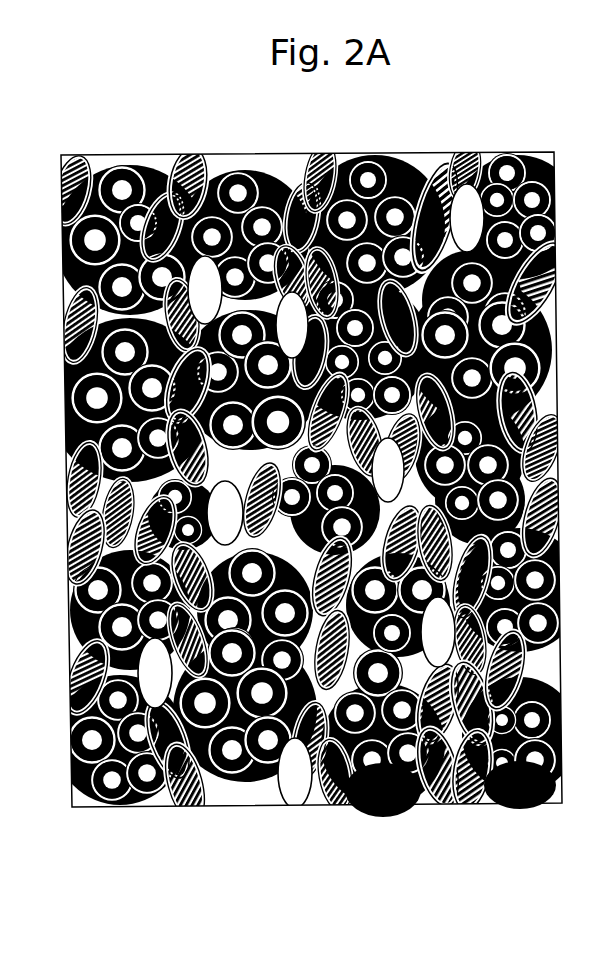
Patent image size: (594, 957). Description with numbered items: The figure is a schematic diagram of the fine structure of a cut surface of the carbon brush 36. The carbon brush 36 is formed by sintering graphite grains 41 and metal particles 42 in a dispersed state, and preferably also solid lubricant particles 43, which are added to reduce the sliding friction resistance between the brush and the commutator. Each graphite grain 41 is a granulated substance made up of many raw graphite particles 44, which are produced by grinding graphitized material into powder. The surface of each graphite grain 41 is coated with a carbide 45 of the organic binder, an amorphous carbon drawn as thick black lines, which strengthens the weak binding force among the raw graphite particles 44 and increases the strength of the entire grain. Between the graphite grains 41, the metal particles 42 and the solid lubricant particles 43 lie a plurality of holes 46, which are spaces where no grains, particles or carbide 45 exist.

The carbon brush 36 is at (221, 854).
The graphite grain 41 is at (513, 807).
The metal particle 42 is at (129, 186).
The solid lubricant particle 43 is at (295, 773).
The raw graphite particle 44 is at (453, 768).
The carbide of the organic binder 45 is at (383, 812).
The hole 46 is at (392, 175).